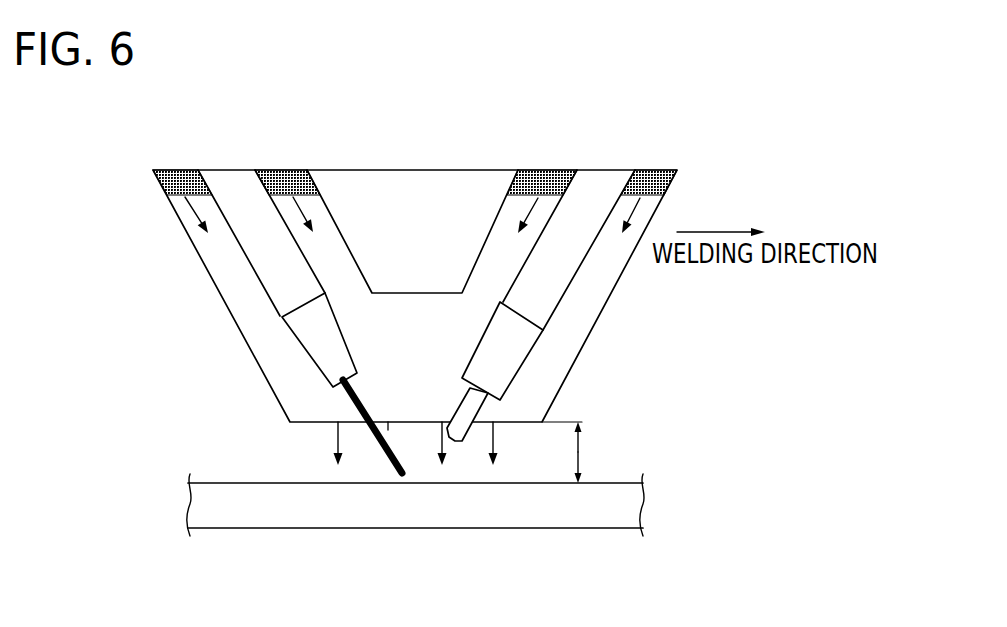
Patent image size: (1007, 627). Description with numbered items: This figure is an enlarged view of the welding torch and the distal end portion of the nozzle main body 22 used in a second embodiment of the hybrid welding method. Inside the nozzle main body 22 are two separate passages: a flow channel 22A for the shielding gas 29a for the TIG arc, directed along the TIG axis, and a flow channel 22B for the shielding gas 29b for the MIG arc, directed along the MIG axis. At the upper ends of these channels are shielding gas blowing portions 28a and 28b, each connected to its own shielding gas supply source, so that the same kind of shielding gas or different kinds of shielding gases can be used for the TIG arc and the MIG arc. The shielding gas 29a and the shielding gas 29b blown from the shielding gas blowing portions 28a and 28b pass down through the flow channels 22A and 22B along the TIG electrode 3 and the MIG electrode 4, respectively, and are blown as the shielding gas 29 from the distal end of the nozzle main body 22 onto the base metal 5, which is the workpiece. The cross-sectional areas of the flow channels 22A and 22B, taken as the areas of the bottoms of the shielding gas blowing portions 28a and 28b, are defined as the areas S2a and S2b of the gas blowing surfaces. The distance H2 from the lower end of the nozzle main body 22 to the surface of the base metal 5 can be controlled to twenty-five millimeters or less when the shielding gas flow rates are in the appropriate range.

The nozzle main body 22 is at (621, 302).
The flow channel of shielding gas for TIG arc 22A is at (593, 282).
The flow channel of shielding gas for MIG arc 22B is at (237, 280).
The TIG electrode 3 is at (475, 408).
The MIG electrode 4 is at (353, 400).
The base metal 5 is at (302, 527).
The shielding gas blowing portion 28a is at (657, 168).
The shielding gas blowing portion 28b is at (280, 168).
The shielding gas for TIG arc 29a is at (536, 198).
The shielding gas for MIG arc 29b is at (295, 196).
The shielding gas blown from nozzle distal end 29 is at (498, 440).
The area of gas blowing surface S2a is at (662, 205).
The area of gas blowing surface S2b is at (176, 198).
The distance from lower end of nozzle main body to base metal surface H2 is at (578, 452).